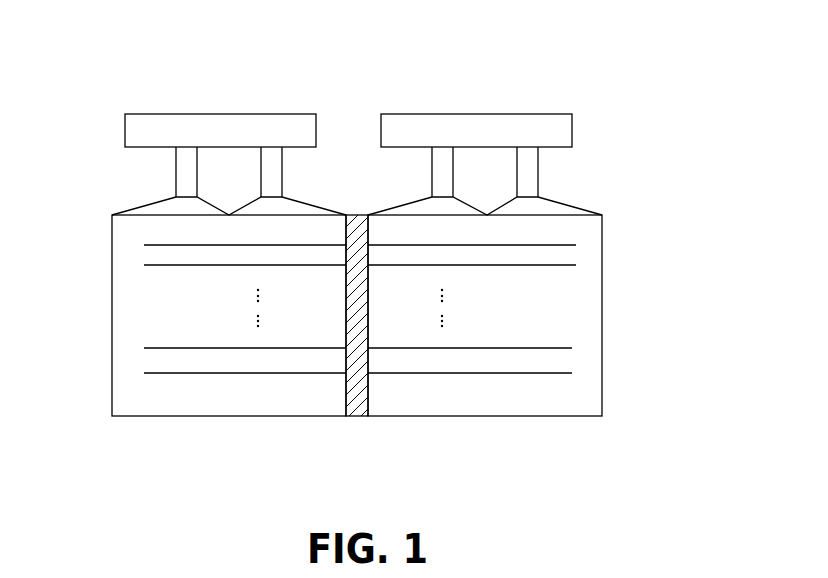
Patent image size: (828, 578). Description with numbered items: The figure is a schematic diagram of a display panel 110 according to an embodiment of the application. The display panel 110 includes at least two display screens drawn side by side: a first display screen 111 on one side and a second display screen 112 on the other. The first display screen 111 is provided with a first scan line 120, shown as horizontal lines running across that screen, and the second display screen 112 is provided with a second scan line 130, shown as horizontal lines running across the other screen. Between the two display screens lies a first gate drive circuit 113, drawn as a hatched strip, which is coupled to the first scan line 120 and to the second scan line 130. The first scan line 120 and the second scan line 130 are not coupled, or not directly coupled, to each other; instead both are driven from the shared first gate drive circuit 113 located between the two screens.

The display panel 110 is at (371, 267).
The first display screen 111 is at (186, 354).
The second display screen 112 is at (541, 356).
The first gate drive circuit 113 is at (357, 408).
The first scan line 120 is at (150, 252).
The second scan line 130 is at (577, 251).